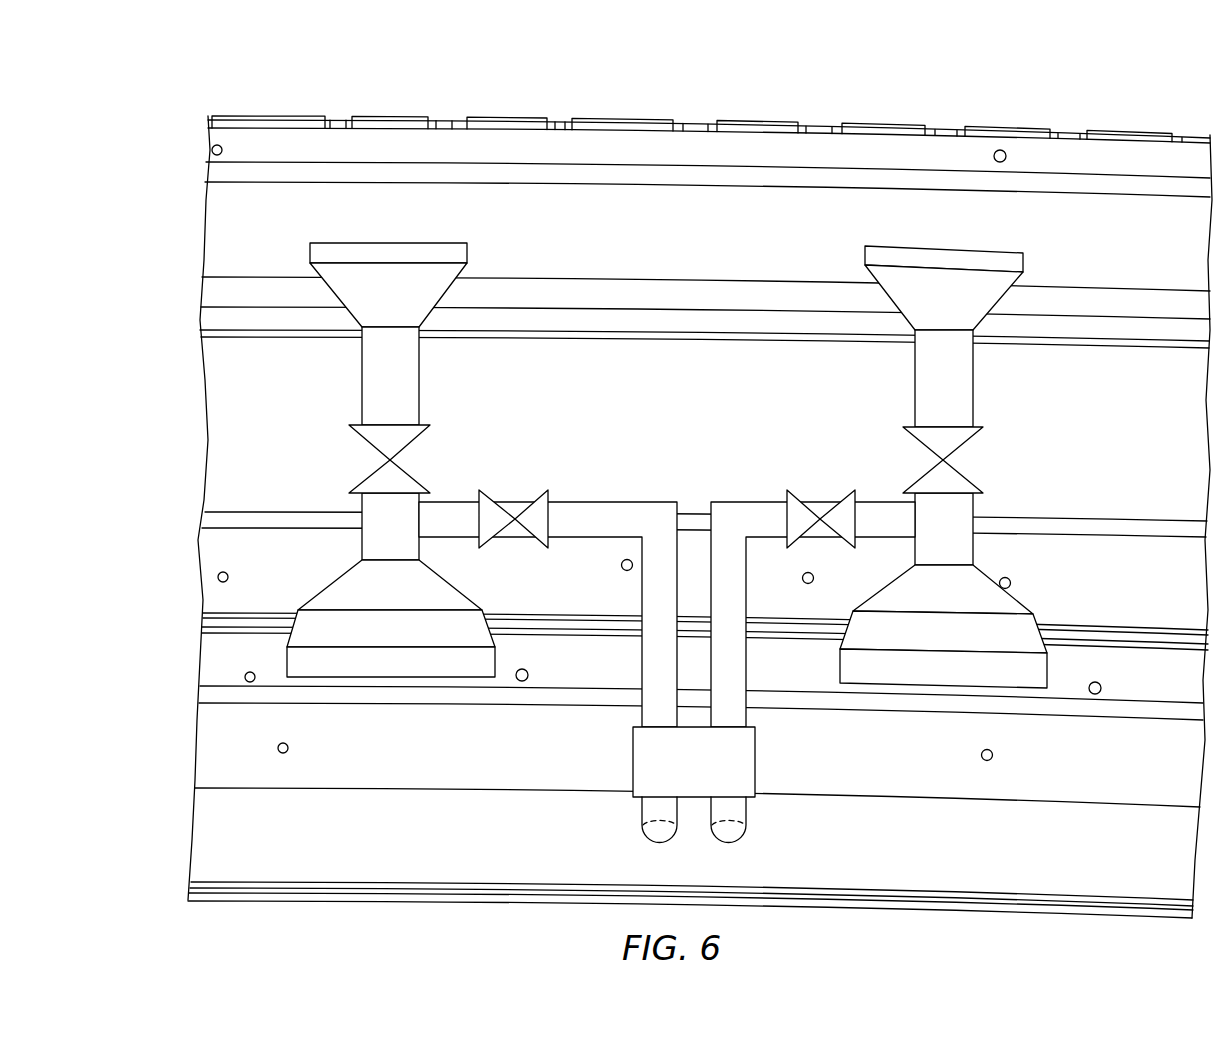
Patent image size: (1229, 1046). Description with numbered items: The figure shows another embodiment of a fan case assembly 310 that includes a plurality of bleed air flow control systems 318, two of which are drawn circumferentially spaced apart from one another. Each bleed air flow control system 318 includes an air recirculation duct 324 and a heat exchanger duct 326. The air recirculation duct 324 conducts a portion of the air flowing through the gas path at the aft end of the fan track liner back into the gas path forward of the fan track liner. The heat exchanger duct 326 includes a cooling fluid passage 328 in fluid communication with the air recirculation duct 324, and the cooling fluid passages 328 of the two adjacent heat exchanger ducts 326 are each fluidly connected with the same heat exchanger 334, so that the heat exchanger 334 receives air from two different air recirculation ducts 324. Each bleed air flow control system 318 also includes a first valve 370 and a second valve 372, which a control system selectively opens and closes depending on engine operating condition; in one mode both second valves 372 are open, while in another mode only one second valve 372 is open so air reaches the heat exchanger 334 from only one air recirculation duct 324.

The fan case assembly 310 is at (372, 108).
The bleed air flow control system 318 is at (548, 230).
The air recirculation duct 324 is at (450, 377).
The heat exchanger duct 326 is at (547, 650).
The cooling fluid passage 328 is at (642, 640).
The heat exchanger 334 is at (757, 765).
The first valve 370 is at (352, 465).
The second valve 372 is at (515, 512).